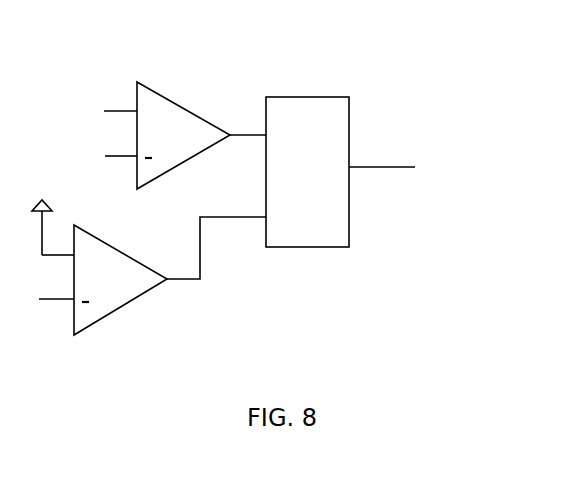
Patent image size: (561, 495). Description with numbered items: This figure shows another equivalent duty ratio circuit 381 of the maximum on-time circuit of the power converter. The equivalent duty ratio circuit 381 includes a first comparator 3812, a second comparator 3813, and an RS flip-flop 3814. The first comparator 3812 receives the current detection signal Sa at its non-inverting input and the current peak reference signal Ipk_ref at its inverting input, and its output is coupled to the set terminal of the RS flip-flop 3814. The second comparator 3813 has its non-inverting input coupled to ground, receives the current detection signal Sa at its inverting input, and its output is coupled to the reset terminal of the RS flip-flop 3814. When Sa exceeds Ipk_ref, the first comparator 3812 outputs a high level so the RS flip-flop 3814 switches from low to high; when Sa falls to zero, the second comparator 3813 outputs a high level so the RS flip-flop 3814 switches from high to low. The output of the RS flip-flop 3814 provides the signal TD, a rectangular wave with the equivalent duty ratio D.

The equivalent duty ratio circuit 381 is at (229, 202).
The first comparator 3812 is at (185, 107).
The second comparator 3813 is at (118, 310).
The RS flip-flop 3814 is at (349, 118).